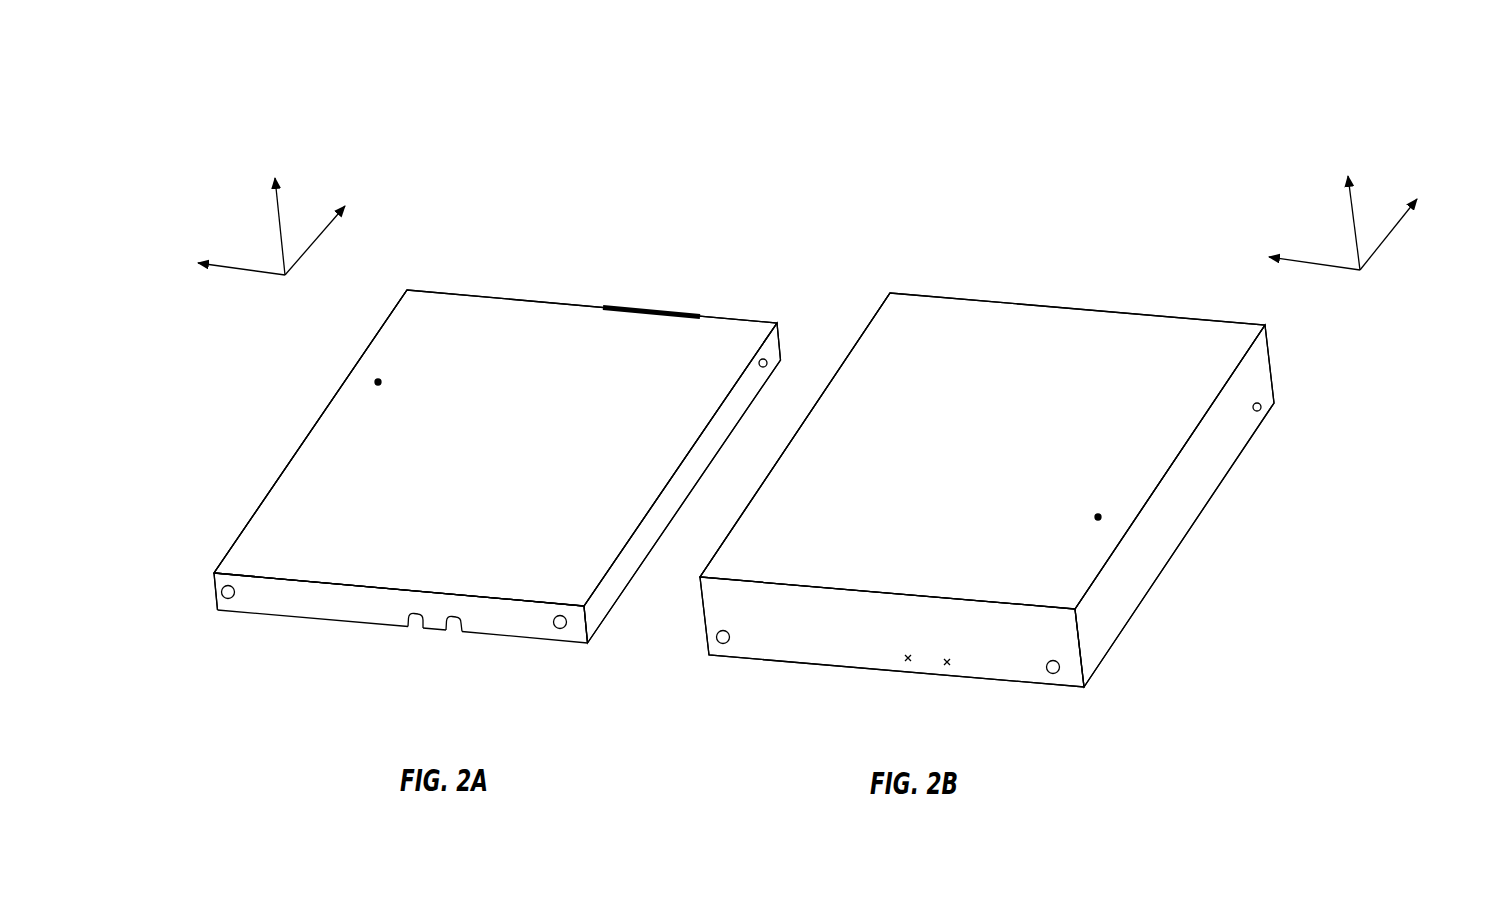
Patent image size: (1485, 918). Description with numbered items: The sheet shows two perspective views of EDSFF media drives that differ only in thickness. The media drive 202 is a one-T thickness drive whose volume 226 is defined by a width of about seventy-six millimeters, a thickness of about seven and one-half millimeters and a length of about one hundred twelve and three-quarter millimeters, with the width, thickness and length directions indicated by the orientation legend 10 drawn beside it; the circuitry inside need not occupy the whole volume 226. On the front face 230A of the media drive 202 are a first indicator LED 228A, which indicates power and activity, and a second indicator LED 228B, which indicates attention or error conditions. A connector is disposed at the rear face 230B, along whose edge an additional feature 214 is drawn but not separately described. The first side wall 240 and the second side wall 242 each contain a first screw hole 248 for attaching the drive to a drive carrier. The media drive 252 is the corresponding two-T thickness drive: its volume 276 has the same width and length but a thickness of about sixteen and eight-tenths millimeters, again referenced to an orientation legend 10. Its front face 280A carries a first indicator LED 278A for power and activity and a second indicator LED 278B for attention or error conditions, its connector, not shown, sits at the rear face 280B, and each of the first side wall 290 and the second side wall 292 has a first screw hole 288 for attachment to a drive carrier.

In FIG. 2A, the media drive 202 is at (205, 112).
In FIG. 2B, the media drive 252 is at (1355, 112).
In FIG. 2A, the orientation legend 10 is at (220, 223).
In FIG. 2B, the orientation legend 10 is at (1317, 220).
In FIG. 2A, the rear face 230B is at (438, 293).
In FIG. 2A, the front face 230A is at (263, 600).
In FIG. 2A, the volume 226 is at (378, 382).
In FIG. 2A, the seam region 214 is at (640, 308).
In FIG. 2A, the first screw hole 248 is at (766, 360).
In FIG. 2A, the second side wall 242 is at (673, 488).
In FIG. 2A, the first side wall 240 is at (292, 452).
In FIG. 2A, the first indicator LED 228A is at (410, 615).
In FIG. 2A, the second indicator LED 228B is at (452, 624).
In FIG. 2B, the rear face 280B is at (968, 298).
In FIG. 2B, the front face 280A is at (785, 642).
In FIG. 2B, the first side wall 290 is at (877, 313).
In FIG. 2B, the volume 276 is at (1098, 517).
In FIG. 2B, the first screw hole 288 is at (1258, 410).
In FIG. 2B, the second side wall 292 is at (1215, 473).
In FIG. 2B, the first indicator LED 278A is at (908, 658).
In FIG. 2B, the second indicator LED 278B is at (947, 662).